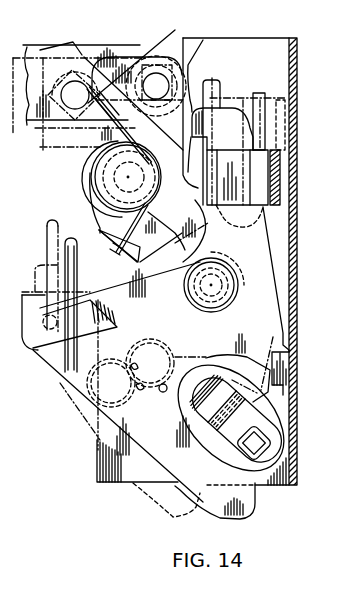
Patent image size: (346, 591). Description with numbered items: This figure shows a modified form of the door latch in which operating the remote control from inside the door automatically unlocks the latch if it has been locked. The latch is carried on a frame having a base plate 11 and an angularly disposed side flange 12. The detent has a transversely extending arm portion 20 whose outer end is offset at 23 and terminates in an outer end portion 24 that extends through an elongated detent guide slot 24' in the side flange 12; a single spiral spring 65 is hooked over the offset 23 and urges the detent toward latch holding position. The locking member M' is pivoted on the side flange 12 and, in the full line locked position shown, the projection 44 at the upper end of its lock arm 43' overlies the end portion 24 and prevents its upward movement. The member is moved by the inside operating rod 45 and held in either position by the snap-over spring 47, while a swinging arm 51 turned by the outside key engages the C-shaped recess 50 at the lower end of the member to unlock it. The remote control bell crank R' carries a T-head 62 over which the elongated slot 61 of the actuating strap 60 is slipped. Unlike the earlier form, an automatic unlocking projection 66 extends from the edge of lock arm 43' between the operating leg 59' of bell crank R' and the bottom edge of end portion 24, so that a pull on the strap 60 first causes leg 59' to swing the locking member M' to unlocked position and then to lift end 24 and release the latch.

The base plate portion 11 is at (298, 75).
The side flange portion 12 is at (97, 455).
The actuating strap 60 is at (89, 52).
The elongated slot 61 is at (118, 62).
The T-head 62 is at (166, 46).
The projection 44 is at (215, 42).
The detent guide slot 24' is at (222, 126).
The offset 23 is at (253, 125).
The transversely extending arm portion 20 is at (283, 186).
The spring 65 is at (277, 165).
The lock arm 43' is at (297, 301).
The outer end portion 24 is at (132, 179).
The bell-crank lever R' is at (112, 160).
The automatic unlocking projection 66 is at (162, 236).
The operating leg 59' is at (136, 250).
The operating rod 45 is at (62, 275).
The snap-over spring 47 is at (158, 348).
The locking member M' is at (111, 358).
The C-shaped recess 50 is at (192, 440).
The swinging arm 51 is at (224, 398).